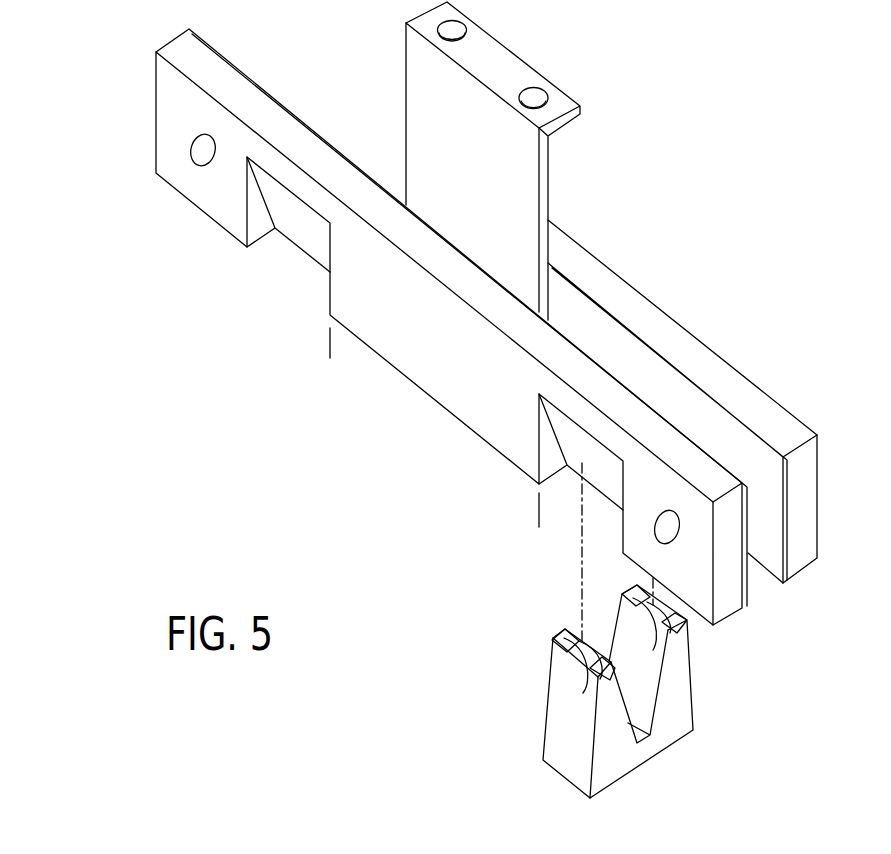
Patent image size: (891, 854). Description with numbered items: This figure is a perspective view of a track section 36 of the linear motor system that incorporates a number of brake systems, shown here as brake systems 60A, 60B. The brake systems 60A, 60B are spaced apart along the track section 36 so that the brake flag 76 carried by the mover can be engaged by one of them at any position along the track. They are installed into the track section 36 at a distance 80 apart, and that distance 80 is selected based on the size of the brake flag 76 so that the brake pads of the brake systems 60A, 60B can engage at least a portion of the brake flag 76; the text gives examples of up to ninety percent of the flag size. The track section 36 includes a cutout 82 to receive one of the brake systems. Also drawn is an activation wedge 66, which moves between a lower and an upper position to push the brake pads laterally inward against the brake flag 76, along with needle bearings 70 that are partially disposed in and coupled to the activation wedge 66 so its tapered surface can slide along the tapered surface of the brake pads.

The track section 36 is at (756, 242).
The brake system 60A is at (232, 275).
The brake system 60B is at (497, 514).
The activation wedge 66 is at (683, 705).
The needle bearings 70 is at (572, 673).
The brake flag 76 is at (543, 193).
The distance 80 is at (539, 510).
The cutout 82 is at (607, 480).